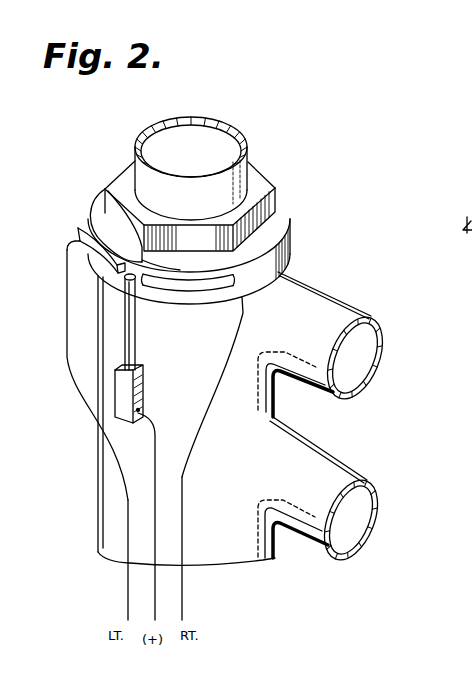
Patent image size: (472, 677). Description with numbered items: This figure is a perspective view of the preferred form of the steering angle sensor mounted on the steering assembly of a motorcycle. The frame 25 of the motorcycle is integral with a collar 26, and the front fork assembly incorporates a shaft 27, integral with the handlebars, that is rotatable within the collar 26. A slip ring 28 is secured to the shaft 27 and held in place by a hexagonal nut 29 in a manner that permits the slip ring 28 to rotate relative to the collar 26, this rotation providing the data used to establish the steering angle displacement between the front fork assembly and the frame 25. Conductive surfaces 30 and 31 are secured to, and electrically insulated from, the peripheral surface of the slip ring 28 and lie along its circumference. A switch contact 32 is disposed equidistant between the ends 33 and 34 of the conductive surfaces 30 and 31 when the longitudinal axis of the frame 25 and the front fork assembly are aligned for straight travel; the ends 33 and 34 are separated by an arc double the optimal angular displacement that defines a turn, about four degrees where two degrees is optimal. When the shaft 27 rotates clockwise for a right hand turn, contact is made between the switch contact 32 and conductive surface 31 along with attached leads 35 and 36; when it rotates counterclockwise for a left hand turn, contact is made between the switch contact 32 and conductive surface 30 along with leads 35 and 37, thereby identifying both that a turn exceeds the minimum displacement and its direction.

The frame 25 is at (325, 467).
The collar 26 is at (108, 505).
The shaft 27 is at (217, 182).
The slip ring 28 is at (292, 238).
The hexagonal nut 29 is at (260, 210).
The conductive surface 30 is at (97, 262).
The conductive surface 31 is at (200, 288).
The switch contact 32 is at (130, 302).
The end 33 is at (100, 213).
The end 34 is at (142, 260).
The lead 35 is at (157, 505).
The lead 36 is at (183, 590).
The lead 37 is at (127, 542).